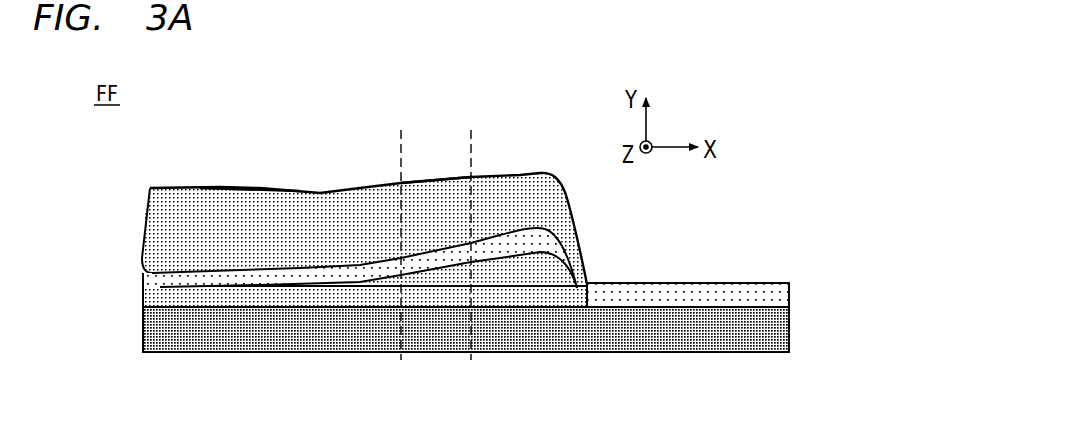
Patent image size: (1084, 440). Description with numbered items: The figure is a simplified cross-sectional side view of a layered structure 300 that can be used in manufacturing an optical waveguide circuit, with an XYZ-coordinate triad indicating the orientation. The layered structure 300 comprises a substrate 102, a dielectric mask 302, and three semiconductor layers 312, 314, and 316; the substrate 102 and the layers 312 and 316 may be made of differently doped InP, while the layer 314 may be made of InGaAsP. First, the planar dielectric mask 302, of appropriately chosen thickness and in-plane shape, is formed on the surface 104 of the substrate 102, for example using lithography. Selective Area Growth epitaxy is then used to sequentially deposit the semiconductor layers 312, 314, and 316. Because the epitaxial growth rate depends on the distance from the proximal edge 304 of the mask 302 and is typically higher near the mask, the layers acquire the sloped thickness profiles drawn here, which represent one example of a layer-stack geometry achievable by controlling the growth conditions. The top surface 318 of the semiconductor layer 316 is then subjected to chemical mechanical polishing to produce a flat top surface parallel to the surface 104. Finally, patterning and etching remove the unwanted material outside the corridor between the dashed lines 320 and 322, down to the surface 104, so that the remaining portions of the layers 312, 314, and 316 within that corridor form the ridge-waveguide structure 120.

The layered structure 300 is at (127, 68).
The substrate 102 is at (146, 333).
The surface of substrate 104 is at (257, 314).
The ridge-waveguide structure 120 is at (440, 118).
The dielectric mask 302 is at (703, 283).
The edge of mask 304 is at (591, 282).
The semiconductor layer 312 is at (143, 296).
The semiconductor layer 314 is at (143, 276).
The semiconductor layer 316 is at (142, 224).
The top surface of semiconductor layer 318 is at (258, 185).
The dashed line 320 is at (401, 147).
The dashed line 322 is at (473, 148).